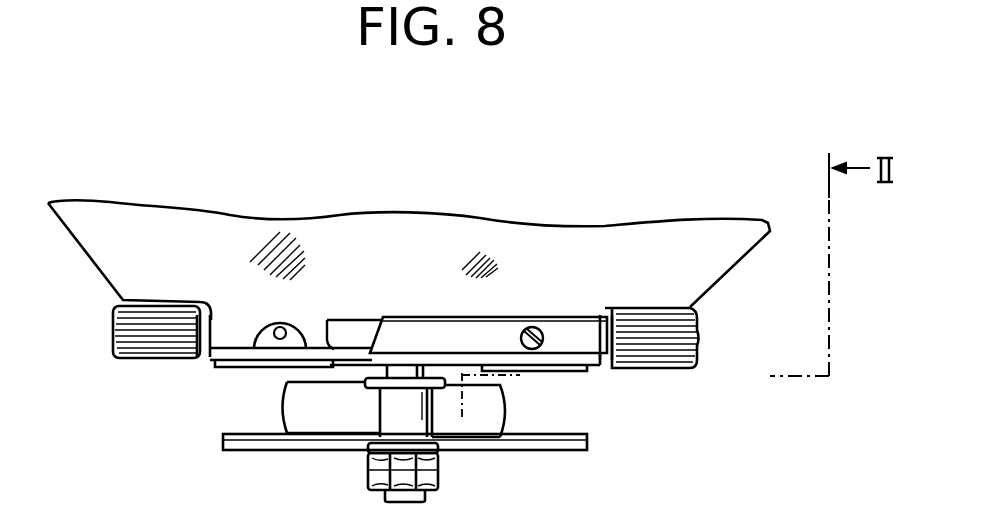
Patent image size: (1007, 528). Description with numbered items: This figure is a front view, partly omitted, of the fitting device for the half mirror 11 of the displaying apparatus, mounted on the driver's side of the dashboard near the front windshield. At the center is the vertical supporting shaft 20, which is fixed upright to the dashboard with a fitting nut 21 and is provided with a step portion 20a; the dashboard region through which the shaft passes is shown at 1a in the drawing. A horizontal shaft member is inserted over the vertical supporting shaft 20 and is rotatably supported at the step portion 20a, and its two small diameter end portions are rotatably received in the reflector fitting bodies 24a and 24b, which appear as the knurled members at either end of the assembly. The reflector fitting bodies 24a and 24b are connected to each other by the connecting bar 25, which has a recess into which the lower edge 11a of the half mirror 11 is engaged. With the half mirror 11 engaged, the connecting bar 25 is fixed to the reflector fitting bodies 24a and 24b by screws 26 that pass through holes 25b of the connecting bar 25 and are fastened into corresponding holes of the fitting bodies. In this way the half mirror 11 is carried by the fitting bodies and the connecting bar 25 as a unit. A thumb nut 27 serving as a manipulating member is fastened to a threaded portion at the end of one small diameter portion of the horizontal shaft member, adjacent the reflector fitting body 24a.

The half mirror 11 is at (245, 228).
The lower edge of the half mirror 11a is at (340, 327).
The connecting bar 25 is at (408, 338).
The holes of the connecting bar 25b is at (273, 327).
The screws 26 is at (541, 326).
The reflector fitting body 24a is at (580, 377).
The reflector fitting body 24b is at (220, 365).
The thumb nut 27 is at (668, 353).
The step portion 20a is at (373, 368).
The post 1a is at (500, 407).
The fitting nut 21 is at (440, 462).
The vertical supporting shaft 20 is at (387, 492).